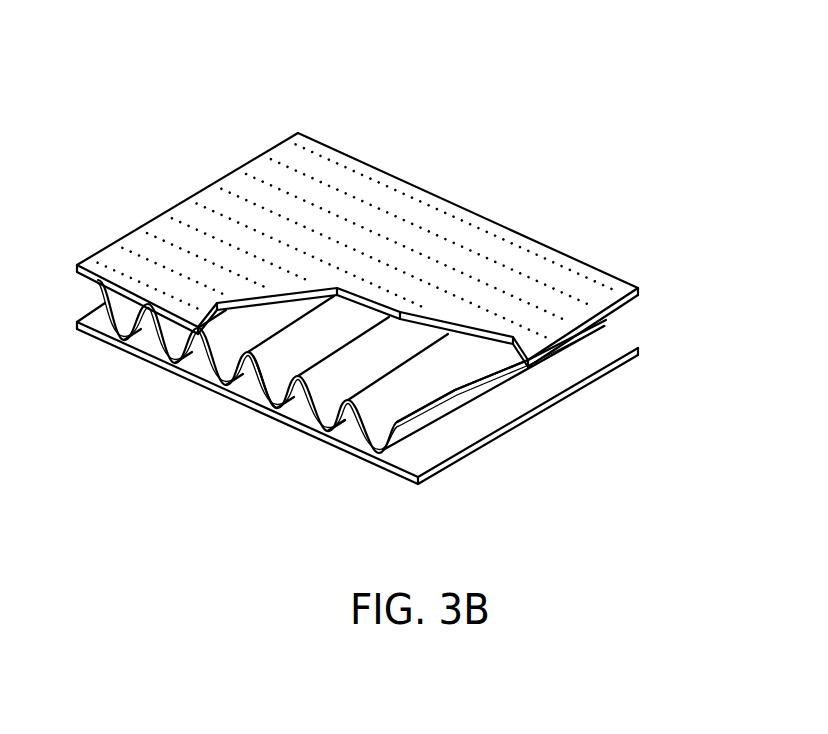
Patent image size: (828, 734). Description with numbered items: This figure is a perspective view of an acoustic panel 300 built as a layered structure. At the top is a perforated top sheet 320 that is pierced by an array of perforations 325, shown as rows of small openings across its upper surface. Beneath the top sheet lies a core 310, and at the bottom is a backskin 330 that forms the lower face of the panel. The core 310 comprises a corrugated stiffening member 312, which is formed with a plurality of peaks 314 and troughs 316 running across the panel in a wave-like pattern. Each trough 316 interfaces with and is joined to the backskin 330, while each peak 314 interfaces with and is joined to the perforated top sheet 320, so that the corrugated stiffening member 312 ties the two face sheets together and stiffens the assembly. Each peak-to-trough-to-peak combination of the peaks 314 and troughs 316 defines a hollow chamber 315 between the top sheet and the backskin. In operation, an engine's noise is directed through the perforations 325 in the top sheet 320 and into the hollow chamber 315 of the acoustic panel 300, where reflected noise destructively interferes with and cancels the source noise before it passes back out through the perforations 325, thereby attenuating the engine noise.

The acoustic panel 300 is at (232, 114).
The core 310 is at (641, 338).
The corrugated stiffening member 312 is at (443, 409).
The peaks 314 is at (346, 401).
The hollow chamber 315 is at (272, 378).
The troughs 316 is at (331, 430).
The perforated top sheet 320 is at (502, 228).
The perforations 325 is at (361, 178).
The backskin 330 is at (543, 408).